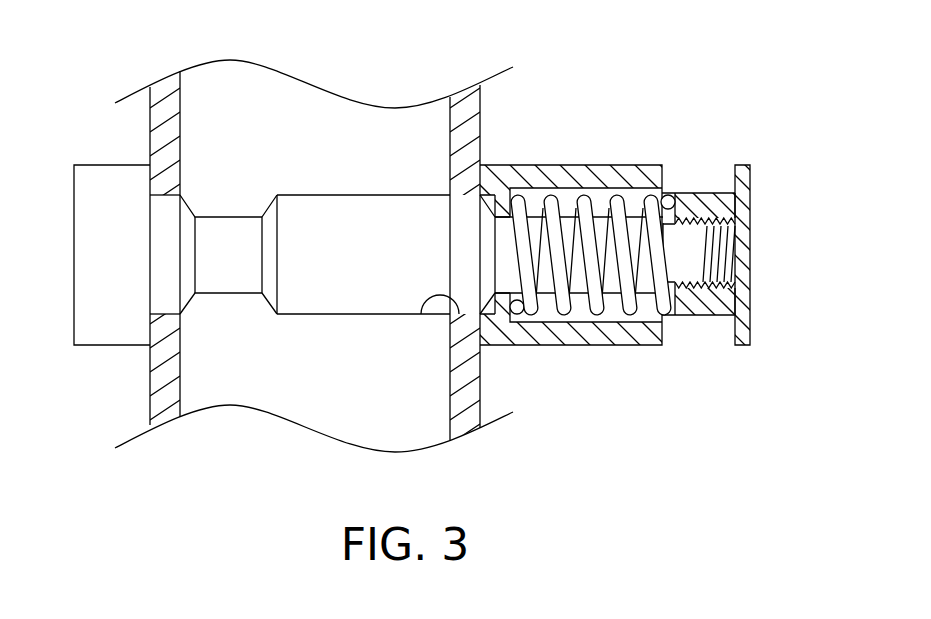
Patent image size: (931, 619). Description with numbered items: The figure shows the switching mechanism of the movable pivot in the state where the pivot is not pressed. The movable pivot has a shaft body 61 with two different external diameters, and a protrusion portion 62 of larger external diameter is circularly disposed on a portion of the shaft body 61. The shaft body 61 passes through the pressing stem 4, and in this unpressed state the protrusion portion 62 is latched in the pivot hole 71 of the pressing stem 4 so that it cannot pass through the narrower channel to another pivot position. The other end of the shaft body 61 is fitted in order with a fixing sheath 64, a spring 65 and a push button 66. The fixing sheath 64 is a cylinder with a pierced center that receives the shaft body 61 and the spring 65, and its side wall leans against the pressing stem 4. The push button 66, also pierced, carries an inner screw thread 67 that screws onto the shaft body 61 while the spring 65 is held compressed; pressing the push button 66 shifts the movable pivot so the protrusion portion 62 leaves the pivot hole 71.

The pressing stem 4 is at (468, 96).
The shaft body 61 is at (225, 217).
The protrusion portion 62 is at (322, 195).
The fixing sheath 64 is at (572, 165).
The spring 65 is at (615, 205).
The push button 66 is at (738, 165).
The inner screw thread 67 is at (749, 270).
The pivot hole 71 is at (422, 316).